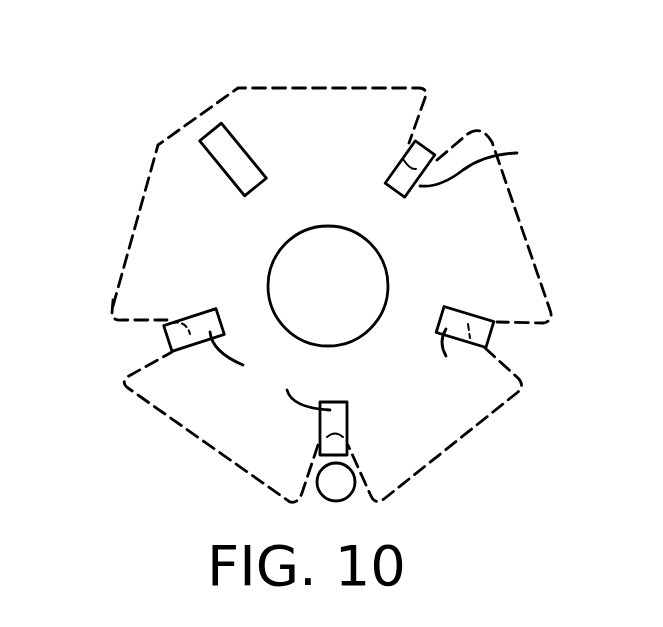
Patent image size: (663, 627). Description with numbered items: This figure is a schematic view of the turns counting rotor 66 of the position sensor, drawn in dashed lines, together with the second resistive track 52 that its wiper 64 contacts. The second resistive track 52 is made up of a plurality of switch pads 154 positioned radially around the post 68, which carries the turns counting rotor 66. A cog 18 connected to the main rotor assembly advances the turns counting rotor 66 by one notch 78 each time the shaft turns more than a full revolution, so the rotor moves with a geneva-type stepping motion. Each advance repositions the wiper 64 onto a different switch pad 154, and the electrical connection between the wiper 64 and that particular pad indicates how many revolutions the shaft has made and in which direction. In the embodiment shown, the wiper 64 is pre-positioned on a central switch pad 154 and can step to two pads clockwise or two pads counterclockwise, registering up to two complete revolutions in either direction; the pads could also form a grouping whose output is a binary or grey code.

The turns counting rotor 66 is at (347, 80).
The post 68 is at (353, 270).
The wiper 64 is at (238, 157).
The second resistive track 52 is at (384, 165).
The switch pad 154 is at (390, 270).
The cog 18 is at (338, 480).
The notch 78 is at (132, 342).